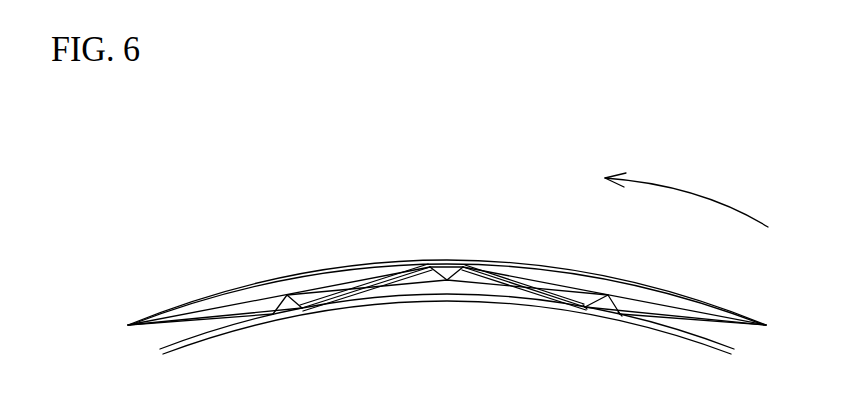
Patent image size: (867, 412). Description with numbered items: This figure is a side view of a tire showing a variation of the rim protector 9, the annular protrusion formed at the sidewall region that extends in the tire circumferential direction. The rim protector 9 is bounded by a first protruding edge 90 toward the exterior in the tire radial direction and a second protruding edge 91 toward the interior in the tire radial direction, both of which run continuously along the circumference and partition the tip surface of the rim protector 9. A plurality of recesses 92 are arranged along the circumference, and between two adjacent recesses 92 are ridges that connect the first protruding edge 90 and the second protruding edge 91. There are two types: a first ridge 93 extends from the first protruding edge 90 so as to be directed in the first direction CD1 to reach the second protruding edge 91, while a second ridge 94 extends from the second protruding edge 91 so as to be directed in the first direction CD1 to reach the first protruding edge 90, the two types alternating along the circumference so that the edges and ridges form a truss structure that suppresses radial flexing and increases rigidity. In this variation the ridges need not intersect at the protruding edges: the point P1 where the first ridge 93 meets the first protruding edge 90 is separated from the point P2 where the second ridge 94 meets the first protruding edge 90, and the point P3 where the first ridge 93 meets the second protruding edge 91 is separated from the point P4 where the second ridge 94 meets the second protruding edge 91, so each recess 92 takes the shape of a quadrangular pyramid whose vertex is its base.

The rim protector 9 is at (326, 240).
The first protruding edge 90 is at (383, 262).
The second protruding edge 91 is at (425, 302).
The recess 92 is at (284, 290).
The first ridge 93 is at (407, 260).
The second ridge 94 is at (183, 318).
The point P1 is at (429, 262).
The point P2 is at (465, 262).
The point P3 is at (622, 318).
The point P4 is at (583, 312).
The first direction CD1 is at (686, 200).